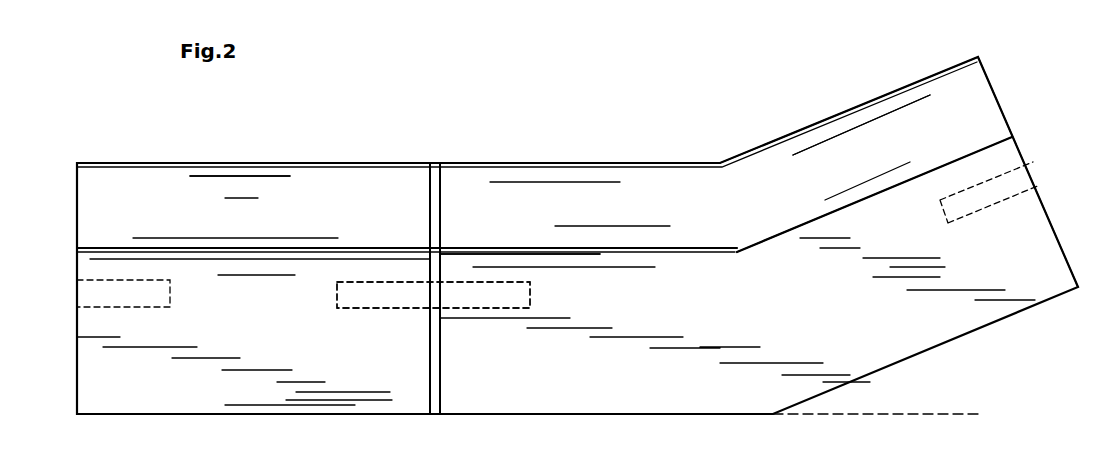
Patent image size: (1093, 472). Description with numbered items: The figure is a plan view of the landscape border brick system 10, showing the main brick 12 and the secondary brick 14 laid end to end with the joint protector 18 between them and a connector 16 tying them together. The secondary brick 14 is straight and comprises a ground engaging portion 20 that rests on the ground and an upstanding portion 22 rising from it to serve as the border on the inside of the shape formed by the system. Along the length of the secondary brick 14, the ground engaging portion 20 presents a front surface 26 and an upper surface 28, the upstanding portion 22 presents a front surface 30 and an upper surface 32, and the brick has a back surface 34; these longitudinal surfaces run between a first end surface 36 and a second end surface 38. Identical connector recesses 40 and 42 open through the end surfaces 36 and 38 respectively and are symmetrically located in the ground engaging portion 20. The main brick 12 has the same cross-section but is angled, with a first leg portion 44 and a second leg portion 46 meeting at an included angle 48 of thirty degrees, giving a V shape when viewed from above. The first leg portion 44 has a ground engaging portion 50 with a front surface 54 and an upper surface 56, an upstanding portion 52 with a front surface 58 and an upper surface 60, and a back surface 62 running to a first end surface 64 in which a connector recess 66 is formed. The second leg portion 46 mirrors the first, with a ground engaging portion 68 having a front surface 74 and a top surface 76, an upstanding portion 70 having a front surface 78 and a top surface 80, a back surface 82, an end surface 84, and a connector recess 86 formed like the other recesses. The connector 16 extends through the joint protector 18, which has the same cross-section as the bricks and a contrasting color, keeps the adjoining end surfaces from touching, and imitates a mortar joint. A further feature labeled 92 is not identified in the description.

The landscape border brick system 10 is at (512, 80).
The main brick 12 is at (708, 78).
The secondary brick 14 is at (77, 163).
The connector 16 is at (391, 296).
The joint protector 18 is at (436, 161).
The ground engaging portion 20 is at (206, 386).
The upstanding portion 22 is at (296, 195).
The front surface 26 is at (140, 415).
The upper surface 28 is at (96, 390).
The front surface 30 is at (97, 250).
The upper surface 32 is at (227, 183).
The back surface 34 is at (135, 163).
The first end surface 36 is at (437, 402).
The second end surface 38 is at (77, 357).
The connector recess 40 is at (350, 296).
The connector recess 42 is at (115, 297).
The first leg portion 44 is at (860, 93).
The second leg portion 46 is at (596, 146).
The included angle 48 is at (878, 372).
The ground engaging portion 50 is at (1010, 297).
The upstanding portion 52 is at (910, 118).
The front surface 54 is at (983, 328).
The upper surface 56 is at (925, 327).
The front surface 58 is at (888, 190).
The upper surface 60 is at (798, 200).
The back surface 62 is at (782, 138).
The first end surface 64 is at (1010, 137).
The connector recess 66 is at (975, 198).
The ground engaging portion 68 is at (572, 397).
The upstanding portion 70 is at (555, 184).
The front surface 74 is at (643, 416).
The top surface 76 is at (698, 376).
The front surface 78 is at (593, 252).
The top surface 80 is at (628, 192).
The back surface 82 is at (676, 164).
The end surface 84 is at (435, 213).
The connector recess 86 is at (530, 297).
The layer 92 is at (304, 464).